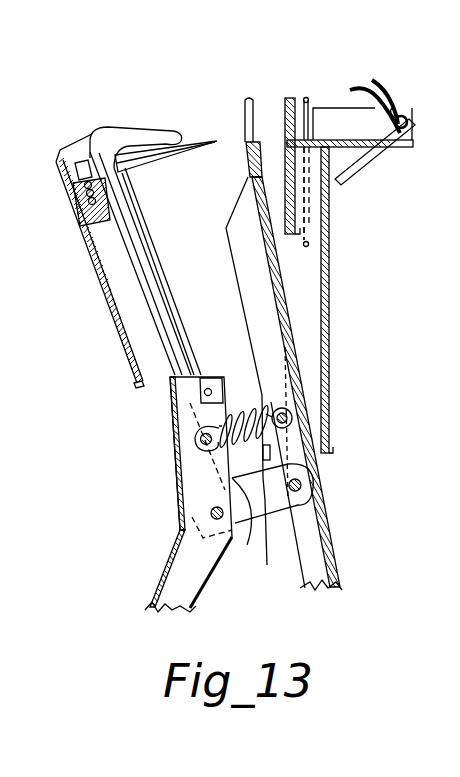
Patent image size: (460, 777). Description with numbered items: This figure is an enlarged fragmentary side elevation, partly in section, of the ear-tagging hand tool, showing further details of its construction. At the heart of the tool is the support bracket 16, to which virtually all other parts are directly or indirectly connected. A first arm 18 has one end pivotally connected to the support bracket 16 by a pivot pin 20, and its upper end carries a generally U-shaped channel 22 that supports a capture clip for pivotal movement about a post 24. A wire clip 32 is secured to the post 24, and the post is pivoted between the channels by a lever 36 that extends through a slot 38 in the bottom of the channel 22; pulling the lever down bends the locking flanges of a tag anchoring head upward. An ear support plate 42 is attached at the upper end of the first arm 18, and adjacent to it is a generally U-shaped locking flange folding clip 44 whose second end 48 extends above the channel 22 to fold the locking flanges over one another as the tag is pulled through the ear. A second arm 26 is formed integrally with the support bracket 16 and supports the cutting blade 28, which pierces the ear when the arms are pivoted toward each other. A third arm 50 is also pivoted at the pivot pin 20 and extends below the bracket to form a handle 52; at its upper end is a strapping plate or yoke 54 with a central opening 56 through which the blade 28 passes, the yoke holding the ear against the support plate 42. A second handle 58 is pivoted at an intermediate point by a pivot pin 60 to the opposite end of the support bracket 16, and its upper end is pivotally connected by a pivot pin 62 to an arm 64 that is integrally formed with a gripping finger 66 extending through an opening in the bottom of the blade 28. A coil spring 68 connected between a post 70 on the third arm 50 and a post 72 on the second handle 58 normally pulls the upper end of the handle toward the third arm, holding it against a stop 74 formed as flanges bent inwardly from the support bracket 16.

The support bracket 16 is at (283, 585).
The first arm 18 is at (329, 303).
The pivot pin 20 is at (303, 485).
The U-shaped channel 22 is at (338, 107).
The post 24 is at (386, 110).
The second arm 26 is at (106, 263).
The cutting blade 28 is at (212, 147).
The wire clip 32 is at (394, 108).
The lever 36 is at (372, 152).
The slot 38 is at (390, 150).
The ear support plate 42 is at (283, 143).
The locking flange folding clip 44 is at (312, 108).
The second end 48 is at (306, 98).
The third arm 50 is at (250, 308).
The handle 52 is at (333, 530).
The strapping plate or yoke 54 is at (252, 184).
The central opening 56 is at (232, 100).
The second handle 58 is at (165, 579).
The pivot pin 60 is at (211, 511).
The pivot pin 62 is at (172, 392).
The arm 64 is at (150, 280).
The gripping finger 66 is at (137, 128).
The coil spring 68 is at (113, 187).
The post 70 is at (292, 420).
The post 72 is at (193, 442).
The stop 74 is at (222, 543).